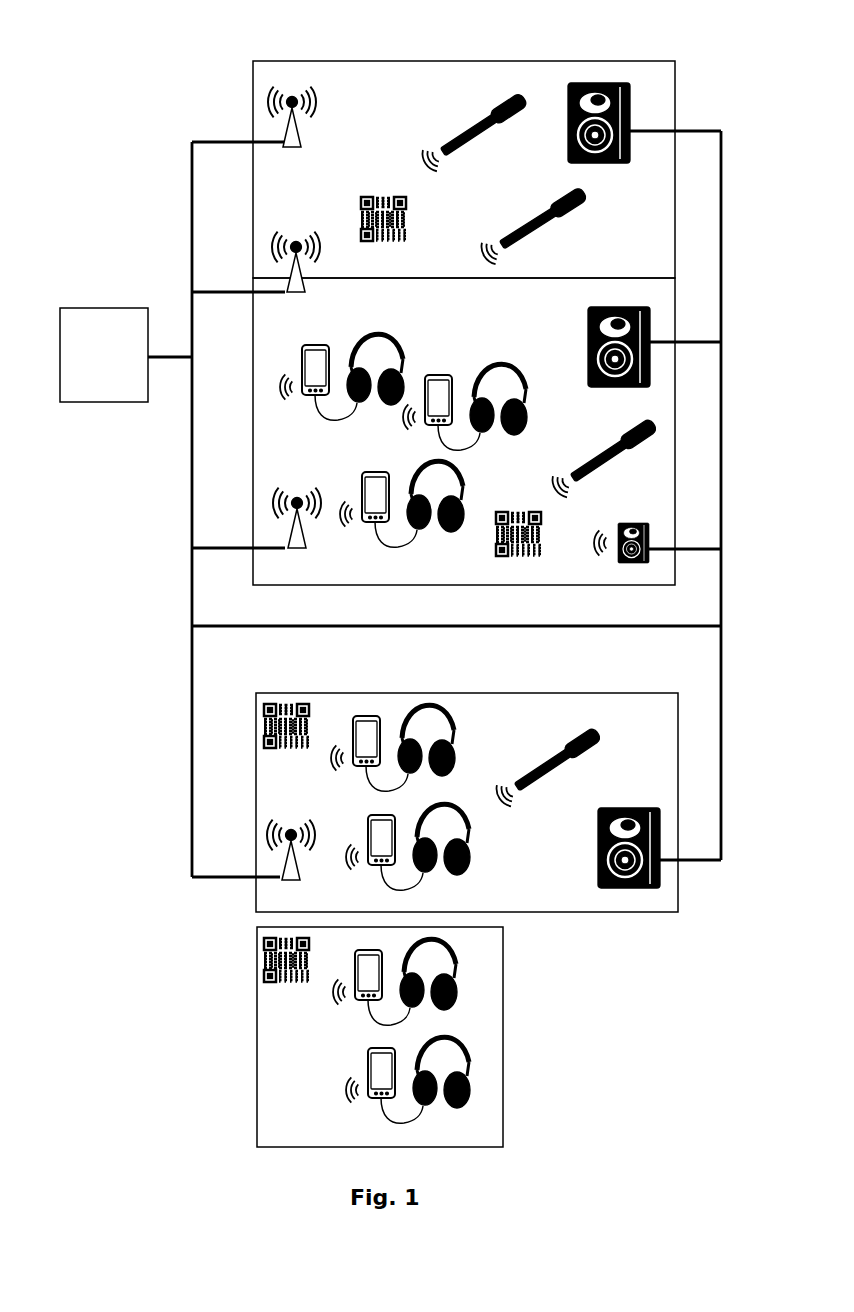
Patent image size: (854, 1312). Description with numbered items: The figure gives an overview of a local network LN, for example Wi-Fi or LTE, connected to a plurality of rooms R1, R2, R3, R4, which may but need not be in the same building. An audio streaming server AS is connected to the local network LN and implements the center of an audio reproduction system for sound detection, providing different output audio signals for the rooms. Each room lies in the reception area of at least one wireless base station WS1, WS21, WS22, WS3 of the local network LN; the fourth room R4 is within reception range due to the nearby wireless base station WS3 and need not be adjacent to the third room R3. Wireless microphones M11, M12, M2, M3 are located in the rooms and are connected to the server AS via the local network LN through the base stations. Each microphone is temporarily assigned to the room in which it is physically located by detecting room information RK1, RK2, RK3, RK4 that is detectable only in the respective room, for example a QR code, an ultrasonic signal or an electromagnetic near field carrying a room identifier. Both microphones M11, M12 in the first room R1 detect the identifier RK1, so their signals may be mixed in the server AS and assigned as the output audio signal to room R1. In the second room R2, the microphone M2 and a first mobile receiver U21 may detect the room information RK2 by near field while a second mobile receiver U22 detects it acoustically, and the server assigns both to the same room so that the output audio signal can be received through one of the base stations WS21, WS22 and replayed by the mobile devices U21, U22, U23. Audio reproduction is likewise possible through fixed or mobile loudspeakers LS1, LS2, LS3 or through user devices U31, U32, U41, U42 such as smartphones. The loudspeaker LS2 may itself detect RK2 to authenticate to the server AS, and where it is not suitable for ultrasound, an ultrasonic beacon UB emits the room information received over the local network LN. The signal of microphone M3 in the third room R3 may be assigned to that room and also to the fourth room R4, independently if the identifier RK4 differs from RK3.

The audio streaming server AS is at (104, 355).
The local network LN is at (192, 183).
The first room R1 is at (363, 60).
The second room R2 is at (253, 388).
The third room R3 is at (307, 693).
The fourth room R4 is at (503, 1053).
The wireless base station WS1 is at (292, 130).
The wireless base station WS21 is at (292, 276).
The wireless base station WS22 is at (294, 506).
The wireless base station WS3 is at (291, 864).
The room information RK1 is at (383, 231).
The room information RK2 is at (518, 547).
The room information RK3 is at (286, 738).
The room information RK4 is at (286, 972).
The first mobile receiver U21 is at (342, 375).
The second mobile receiver U22 is at (465, 405).
The mobile device U23 is at (402, 501).
The mobile device U31 is at (393, 746).
The mobile device U32 is at (408, 852).
The mobile device U41 is at (395, 979).
The mobile device U42 is at (408, 1087).
The wireless microphone M11 is at (480, 131).
The wireless microphone M12 is at (539, 224).
The wireless microphone M2 is at (605, 457).
The wireless microphone M3 is at (549, 766).
The loudspeaker LS1 is at (599, 112).
The loudspeaker LS2 is at (619, 336).
The loudspeaker LS3 is at (629, 837).
The ultrasonic beacon UB is at (621, 532).